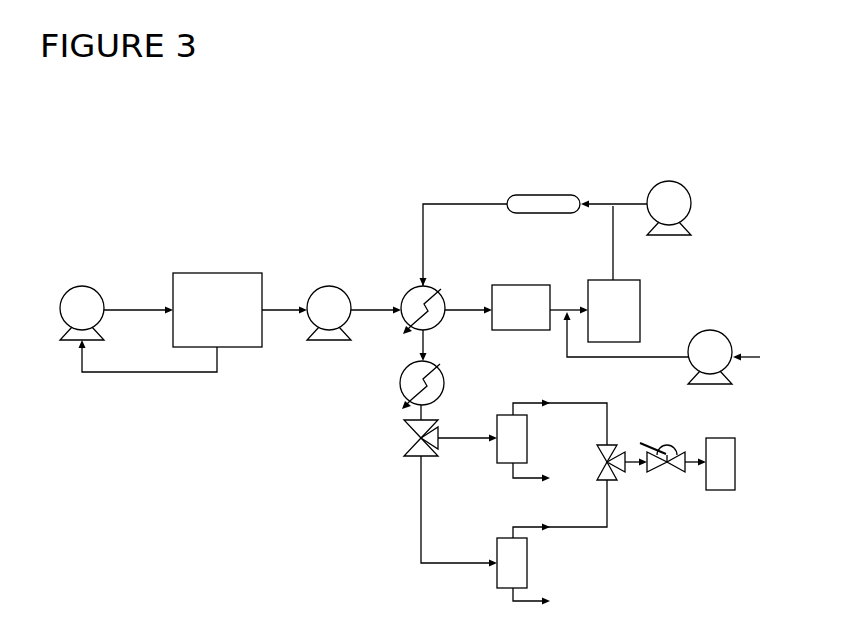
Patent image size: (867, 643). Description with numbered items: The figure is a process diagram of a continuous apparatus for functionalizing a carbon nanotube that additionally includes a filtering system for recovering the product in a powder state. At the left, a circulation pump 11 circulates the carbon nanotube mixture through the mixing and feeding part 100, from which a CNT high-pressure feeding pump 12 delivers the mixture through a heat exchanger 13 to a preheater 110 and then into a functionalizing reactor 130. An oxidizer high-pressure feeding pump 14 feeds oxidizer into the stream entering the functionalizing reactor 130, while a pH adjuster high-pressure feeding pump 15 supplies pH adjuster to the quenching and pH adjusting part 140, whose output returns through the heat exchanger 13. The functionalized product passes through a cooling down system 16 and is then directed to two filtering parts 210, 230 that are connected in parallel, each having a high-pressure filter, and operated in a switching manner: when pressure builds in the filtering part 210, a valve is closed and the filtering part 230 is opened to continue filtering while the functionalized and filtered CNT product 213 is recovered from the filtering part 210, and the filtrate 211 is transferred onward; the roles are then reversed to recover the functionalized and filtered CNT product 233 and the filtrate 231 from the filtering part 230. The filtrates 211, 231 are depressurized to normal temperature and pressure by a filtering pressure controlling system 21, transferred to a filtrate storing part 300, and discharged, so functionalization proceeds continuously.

The circulation pump 11 is at (92, 288).
The mixing and feeding part 100 is at (217, 273).
The CNT high-pressure feeding pump 12 is at (338, 289).
The heat exchanger 13 is at (440, 289).
The cooling down system 16 is at (433, 363).
The preheater 110 is at (520, 285).
The functionalizing reactor 130 is at (625, 280).
The quenching and pH adjusting part 140 is at (546, 195).
The pH adjuster high-pressure feeding pump 15 is at (683, 186).
The oxidizer high-pressure feeding pump 14 is at (722, 335).
The filtering part 210 is at (528, 442).
The filtrate 211 is at (541, 403).
The functionalized and filtered CNT product 213 is at (539, 477).
The filtering part 230 is at (528, 565).
The filtrate 231 is at (539, 527).
The functionalized and filtered CNT product 233 is at (539, 601).
The filtering pressure controlling system 21 is at (672, 450).
The filtrate storing part 300 is at (720, 438).